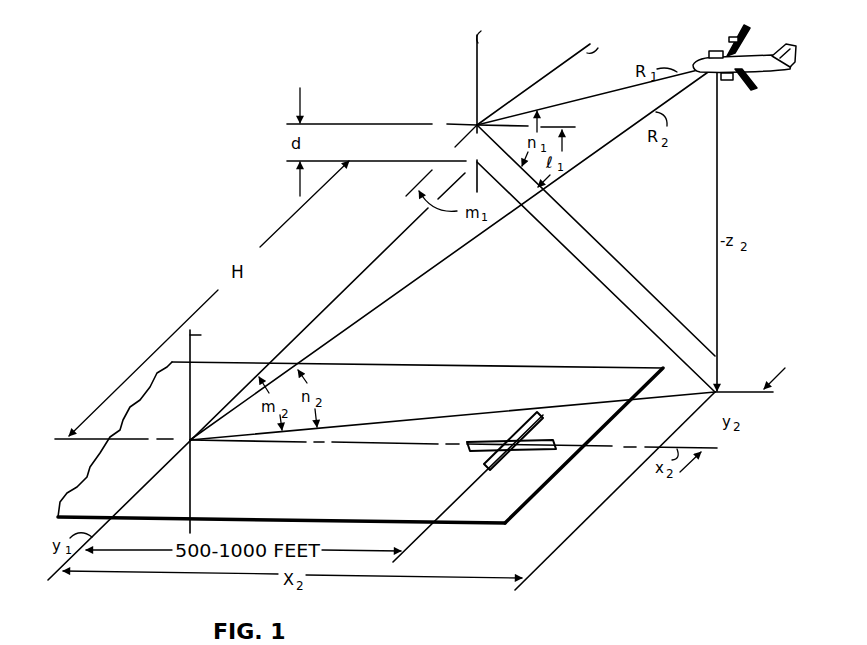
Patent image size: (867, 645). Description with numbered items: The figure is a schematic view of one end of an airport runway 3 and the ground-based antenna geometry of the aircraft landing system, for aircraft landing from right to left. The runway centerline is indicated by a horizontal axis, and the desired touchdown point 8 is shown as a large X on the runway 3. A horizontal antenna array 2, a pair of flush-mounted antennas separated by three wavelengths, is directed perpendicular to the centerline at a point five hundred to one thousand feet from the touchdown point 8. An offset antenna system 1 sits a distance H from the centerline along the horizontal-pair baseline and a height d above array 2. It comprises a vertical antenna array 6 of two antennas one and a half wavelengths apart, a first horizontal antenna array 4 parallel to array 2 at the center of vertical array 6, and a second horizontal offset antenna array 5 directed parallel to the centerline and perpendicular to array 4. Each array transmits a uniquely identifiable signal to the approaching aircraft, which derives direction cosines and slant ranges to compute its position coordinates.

The offset antenna system 1 is at (472, 120).
The horizontal antenna array 2 is at (203, 428).
The end of the runway 3 is at (415, 400).
The first horizontal antenna array 4 is at (492, 114).
The second horizontal offset antenna array 5 is at (492, 128).
The vertical antenna array 6 is at (478, 105).
The touchdown point 8 is at (520, 436).